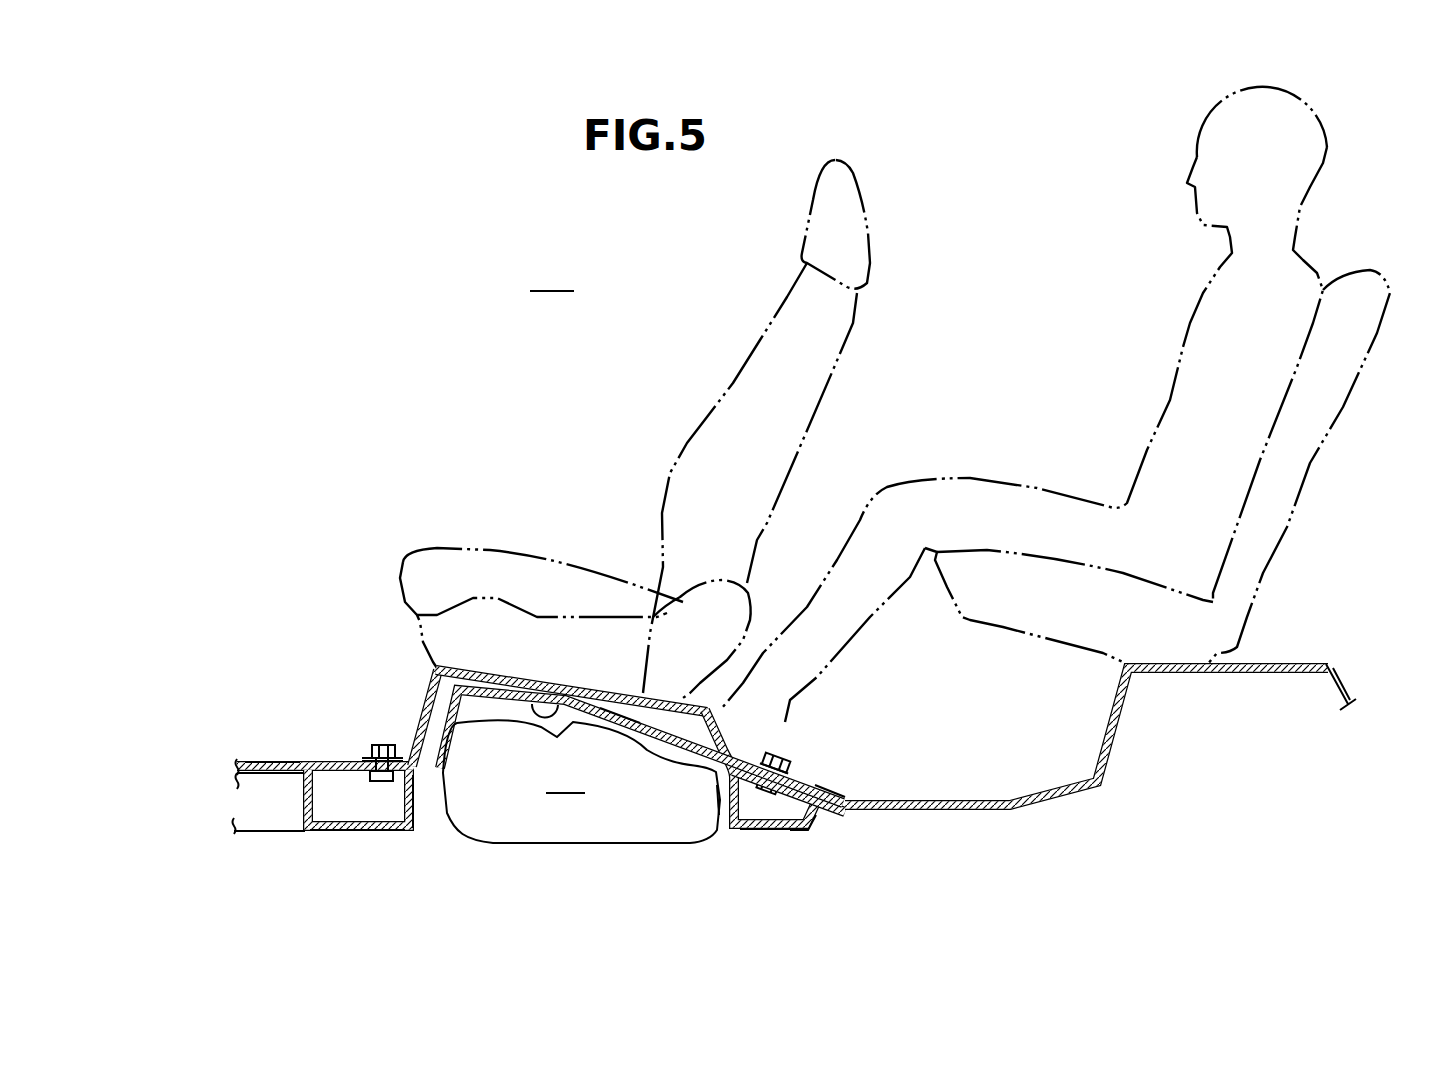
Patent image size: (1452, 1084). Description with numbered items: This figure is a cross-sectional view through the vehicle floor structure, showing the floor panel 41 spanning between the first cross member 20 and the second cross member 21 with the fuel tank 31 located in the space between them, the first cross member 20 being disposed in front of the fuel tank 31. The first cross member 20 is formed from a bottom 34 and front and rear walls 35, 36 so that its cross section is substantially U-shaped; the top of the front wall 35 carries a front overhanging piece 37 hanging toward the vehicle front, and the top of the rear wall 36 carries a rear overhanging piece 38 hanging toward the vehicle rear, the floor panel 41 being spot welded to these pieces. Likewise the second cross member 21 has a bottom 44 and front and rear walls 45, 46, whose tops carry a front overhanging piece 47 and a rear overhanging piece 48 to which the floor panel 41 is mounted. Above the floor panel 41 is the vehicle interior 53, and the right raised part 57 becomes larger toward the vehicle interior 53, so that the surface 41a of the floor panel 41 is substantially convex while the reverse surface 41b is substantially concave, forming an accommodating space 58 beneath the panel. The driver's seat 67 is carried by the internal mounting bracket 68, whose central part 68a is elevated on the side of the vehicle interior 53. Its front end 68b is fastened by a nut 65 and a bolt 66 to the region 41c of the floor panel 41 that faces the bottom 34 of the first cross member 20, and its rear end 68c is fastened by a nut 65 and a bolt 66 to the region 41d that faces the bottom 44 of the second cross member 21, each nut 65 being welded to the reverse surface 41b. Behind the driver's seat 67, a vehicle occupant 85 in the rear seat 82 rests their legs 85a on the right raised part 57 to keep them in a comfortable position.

The first cross member 20 is at (507, 761).
The second cross member 21 is at (840, 798).
The fuel tank 31 is at (550, 845).
The bottom 34 is at (378, 833).
The front wall 35 is at (300, 788).
The rear wall 36 is at (415, 806).
The front overhanging piece 37 is at (260, 758).
The rear overhanging piece 38 is at (408, 748).
The floor panel 41 is at (237, 758).
The surface 41a is at (503, 678).
The reverse surface 41b is at (568, 686).
The region 41c is at (295, 760).
The region 41d is at (838, 791).
The bottom 44 is at (776, 834).
The front wall 45 is at (732, 804).
The rear wall 46 is at (805, 832).
The front overhanging piece 47 is at (712, 708).
The rear overhanging piece 48 is at (850, 797).
The vehicle interior 53 is at (552, 275).
The right raised part 57 is at (478, 675).
The accommodating space 58 is at (581, 781).
The nut 65 is at (347, 823).
The bolt 66 is at (373, 748).
The driver's seat 67 is at (858, 248).
The internal mounting bracket 68 is at (612, 686).
The central part 68a is at (645, 686).
The front end 68b is at (337, 760).
The rear end 68c is at (808, 788).
The rear seat 82 is at (1305, 463).
The vehicle occupant 85 is at (1213, 343).
The legs 85a is at (723, 707).